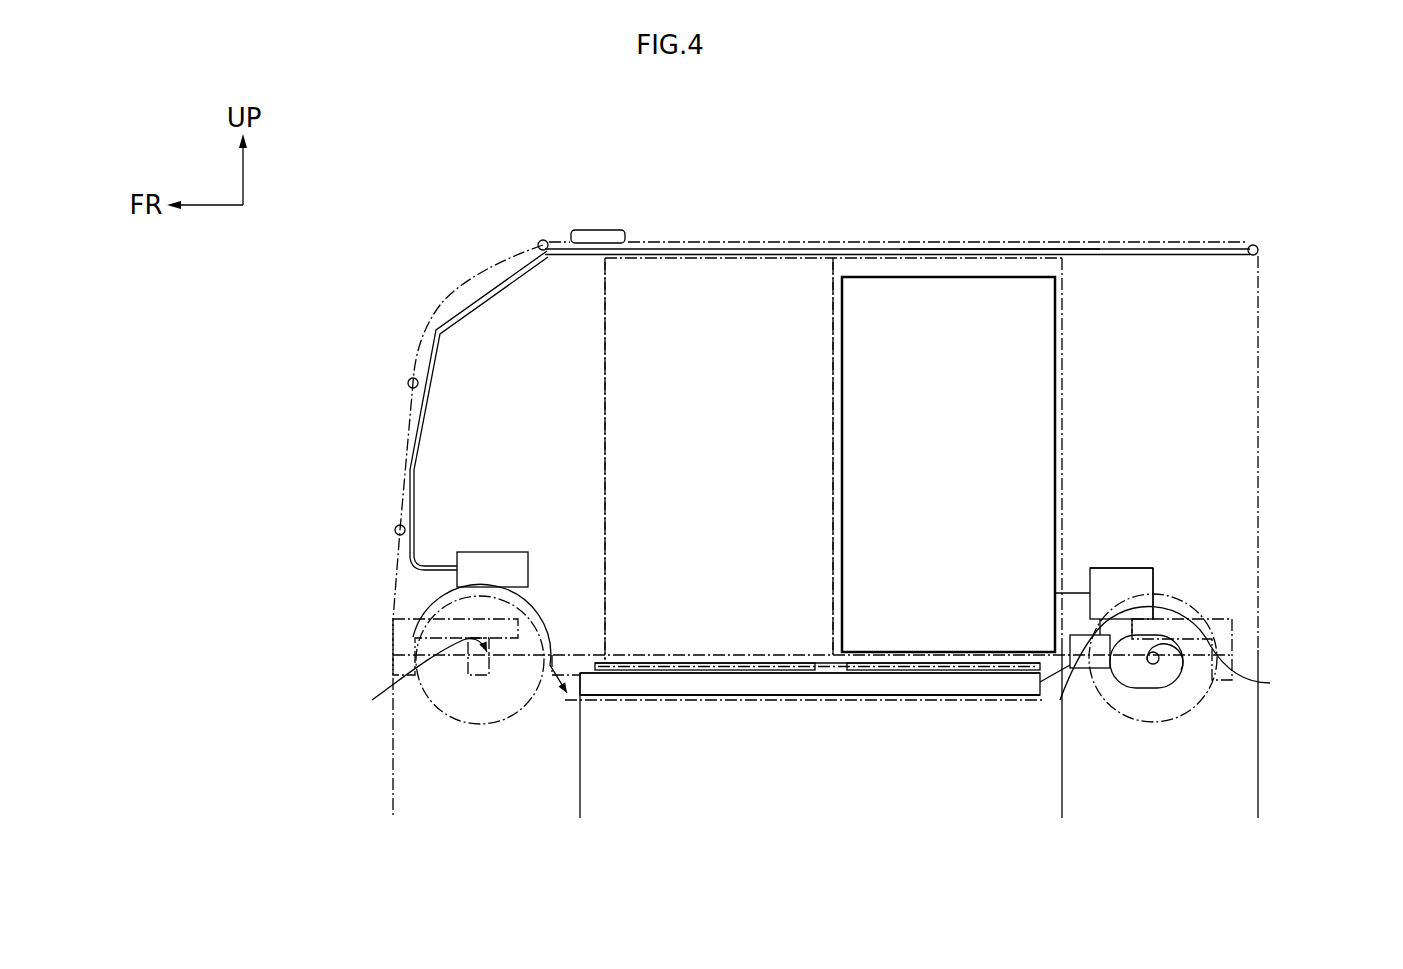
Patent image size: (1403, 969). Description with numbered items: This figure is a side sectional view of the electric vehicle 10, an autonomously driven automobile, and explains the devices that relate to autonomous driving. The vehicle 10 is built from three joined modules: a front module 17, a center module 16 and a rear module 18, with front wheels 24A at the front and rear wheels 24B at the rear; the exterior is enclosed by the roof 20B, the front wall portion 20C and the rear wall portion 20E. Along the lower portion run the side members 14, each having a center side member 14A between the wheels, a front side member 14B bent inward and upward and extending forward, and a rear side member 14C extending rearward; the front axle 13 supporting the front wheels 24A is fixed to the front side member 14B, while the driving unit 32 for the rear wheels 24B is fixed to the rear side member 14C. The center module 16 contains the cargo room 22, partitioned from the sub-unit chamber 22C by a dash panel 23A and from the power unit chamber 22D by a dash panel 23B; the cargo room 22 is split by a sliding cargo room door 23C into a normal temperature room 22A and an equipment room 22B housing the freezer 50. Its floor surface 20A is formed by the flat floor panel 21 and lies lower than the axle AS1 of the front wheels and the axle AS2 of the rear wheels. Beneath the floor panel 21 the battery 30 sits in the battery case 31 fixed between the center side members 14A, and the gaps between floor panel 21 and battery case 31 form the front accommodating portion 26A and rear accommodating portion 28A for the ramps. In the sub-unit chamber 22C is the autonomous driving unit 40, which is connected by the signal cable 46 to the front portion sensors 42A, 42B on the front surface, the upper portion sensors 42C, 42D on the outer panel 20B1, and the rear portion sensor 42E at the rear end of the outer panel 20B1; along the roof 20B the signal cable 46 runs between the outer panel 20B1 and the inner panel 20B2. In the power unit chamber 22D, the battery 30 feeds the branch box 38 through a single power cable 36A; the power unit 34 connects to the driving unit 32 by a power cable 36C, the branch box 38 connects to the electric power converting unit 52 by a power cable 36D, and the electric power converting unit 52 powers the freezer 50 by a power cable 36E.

The vehicle 10 is at (1120, 210).
The front axle 13 is at (475, 677).
The side member 14 is at (567, 702).
The center side member 14A is at (766, 683).
The front side member 14B is at (405, 618).
The rear side member 14C is at (1213, 617).
The center module 16 is at (582, 823).
The front module 17 is at (578, 823).
The rear module 18 is at (1258, 823).
The floor surface 20A is at (699, 663).
The roof 20B is at (605, 118).
The outer panel 20B1 is at (687, 273).
The inner panel 20B2 is at (687, 273).
The front wall portion 20C is at (412, 452).
The rear wall portion 20E is at (1260, 357).
The floor panel 21 is at (621, 662).
The cargo room 22 is at (790, 140).
The normal temperature room 22A is at (807, 268).
The equipment room 22B is at (938, 266).
The sub-unit chamber 22C is at (432, 583).
The power unit chamber 22D is at (1222, 602).
The dash panel 23A is at (604, 390).
The dash panel 23B is at (1063, 373).
The cargo room door 23C is at (832, 433).
The front wheels 24A is at (502, 724).
The rear wheels 24B is at (1148, 723).
The front accommodating portion 26A is at (688, 696).
The rear accommodating portion 28A is at (906, 672).
The battery 30 is at (870, 696).
The battery case 31 is at (825, 697).
The driving unit 32 is at (1180, 710).
The power unit 34 is at (1112, 577).
The power cable 36A is at (1057, 697).
The power cable 36C is at (1165, 567).
The power cable 36D is at (1098, 623).
The power cable 36E is at (1075, 591).
The branch box 38 is at (1087, 670).
The autonomous driving unit 40 is at (498, 552).
The front portion sensor 42A is at (396, 527).
The front portion sensor 42B is at (409, 380).
The upper portion sensor 42C is at (538, 242).
The upper portion sensor 42D is at (597, 230).
The rear portion sensor 42E is at (1257, 246).
The signal cable 46 is at (995, 248).
The freezer 50 is at (1057, 342).
The electric power converting unit 52 is at (1133, 567).
The axle of the front wheels AS1 is at (403, 677).
The axle of the rear wheels AS2 is at (1199, 653).